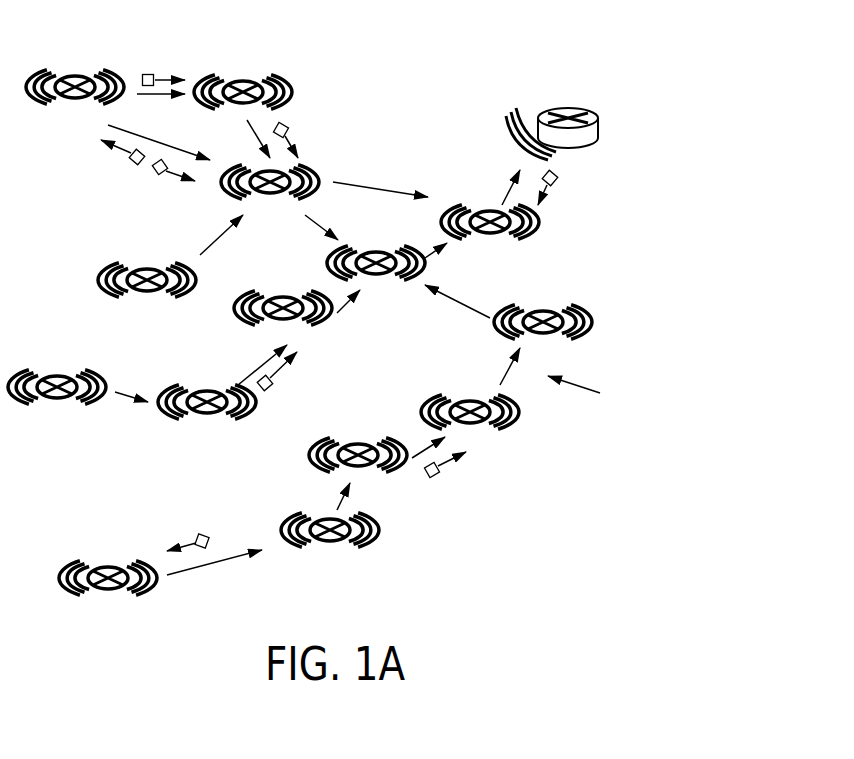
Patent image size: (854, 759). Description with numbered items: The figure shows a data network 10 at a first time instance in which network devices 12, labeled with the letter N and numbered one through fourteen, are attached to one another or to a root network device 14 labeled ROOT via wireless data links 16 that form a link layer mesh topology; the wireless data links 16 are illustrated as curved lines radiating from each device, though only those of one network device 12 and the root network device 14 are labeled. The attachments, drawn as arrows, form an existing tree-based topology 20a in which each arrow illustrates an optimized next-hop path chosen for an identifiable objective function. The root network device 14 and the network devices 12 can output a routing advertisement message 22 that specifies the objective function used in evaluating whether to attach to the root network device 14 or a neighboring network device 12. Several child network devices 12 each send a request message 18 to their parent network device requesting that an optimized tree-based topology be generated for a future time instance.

The data network 10 is at (678, 93).
The network device 12 is at (487, 235).
The root network device 14 is at (600, 125).
The wireless data link 16 is at (505, 125).
The request message 18 is at (150, 73).
The tree-based topology 20a is at (594, 392).
The routing advertisement message 22 is at (134, 164).